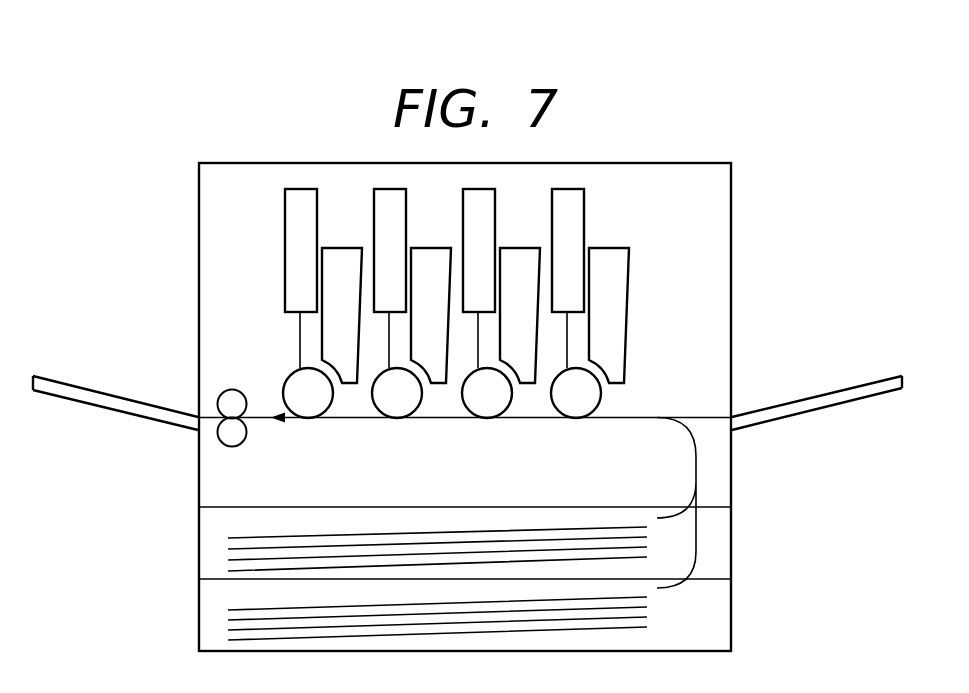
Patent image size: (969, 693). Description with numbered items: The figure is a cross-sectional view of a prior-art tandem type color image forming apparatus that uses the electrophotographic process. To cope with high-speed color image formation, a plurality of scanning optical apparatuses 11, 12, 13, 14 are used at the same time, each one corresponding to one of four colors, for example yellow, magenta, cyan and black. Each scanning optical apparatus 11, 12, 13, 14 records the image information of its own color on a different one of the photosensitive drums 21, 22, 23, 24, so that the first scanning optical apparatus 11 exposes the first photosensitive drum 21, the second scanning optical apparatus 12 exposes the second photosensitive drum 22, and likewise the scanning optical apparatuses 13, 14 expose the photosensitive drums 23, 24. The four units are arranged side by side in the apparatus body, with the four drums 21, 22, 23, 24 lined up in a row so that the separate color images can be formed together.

The scanning optical apparatus 11 is at (319, 208).
The scanning optical apparatus 12 is at (408, 208).
The scanning optical apparatus 13 is at (497, 208).
The scanning optical apparatus 14 is at (586, 208).
The photosensitive drum 21 is at (307, 408).
The photosensitive drum 22 is at (399, 408).
The photosensitive drum 23 is at (487, 408).
The photosensitive drum 24 is at (576, 408).